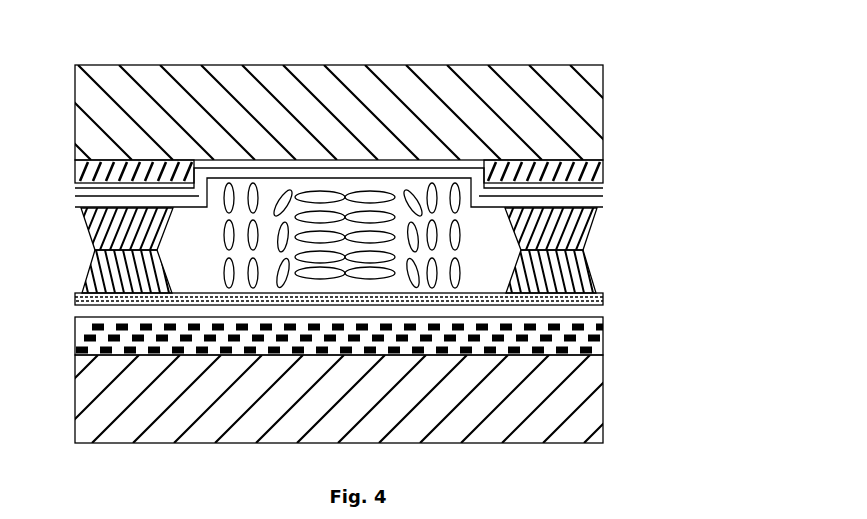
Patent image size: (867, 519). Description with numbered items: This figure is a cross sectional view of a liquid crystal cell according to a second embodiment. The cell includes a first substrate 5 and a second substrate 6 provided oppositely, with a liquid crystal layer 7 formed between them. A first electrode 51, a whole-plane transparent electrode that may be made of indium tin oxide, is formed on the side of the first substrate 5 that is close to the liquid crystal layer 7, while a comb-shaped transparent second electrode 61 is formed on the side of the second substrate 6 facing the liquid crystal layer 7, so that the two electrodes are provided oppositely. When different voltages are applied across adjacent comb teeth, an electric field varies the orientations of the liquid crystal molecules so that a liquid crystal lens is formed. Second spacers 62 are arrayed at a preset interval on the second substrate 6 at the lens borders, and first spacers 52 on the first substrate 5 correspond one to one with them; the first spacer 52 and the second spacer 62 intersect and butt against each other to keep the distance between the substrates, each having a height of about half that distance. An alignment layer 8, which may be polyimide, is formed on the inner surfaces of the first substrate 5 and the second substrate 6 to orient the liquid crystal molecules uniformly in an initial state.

The first substrate 5 is at (603, 403).
The first electrode 51 is at (603, 332).
The first spacer 52 is at (600, 288).
The second substrate 6 is at (603, 100).
The second electrode 61 is at (603, 178).
The second spacer 62 is at (590, 225).
The liquid crystal layer 7 is at (277, 205).
The alignment layer 8 is at (75, 200).